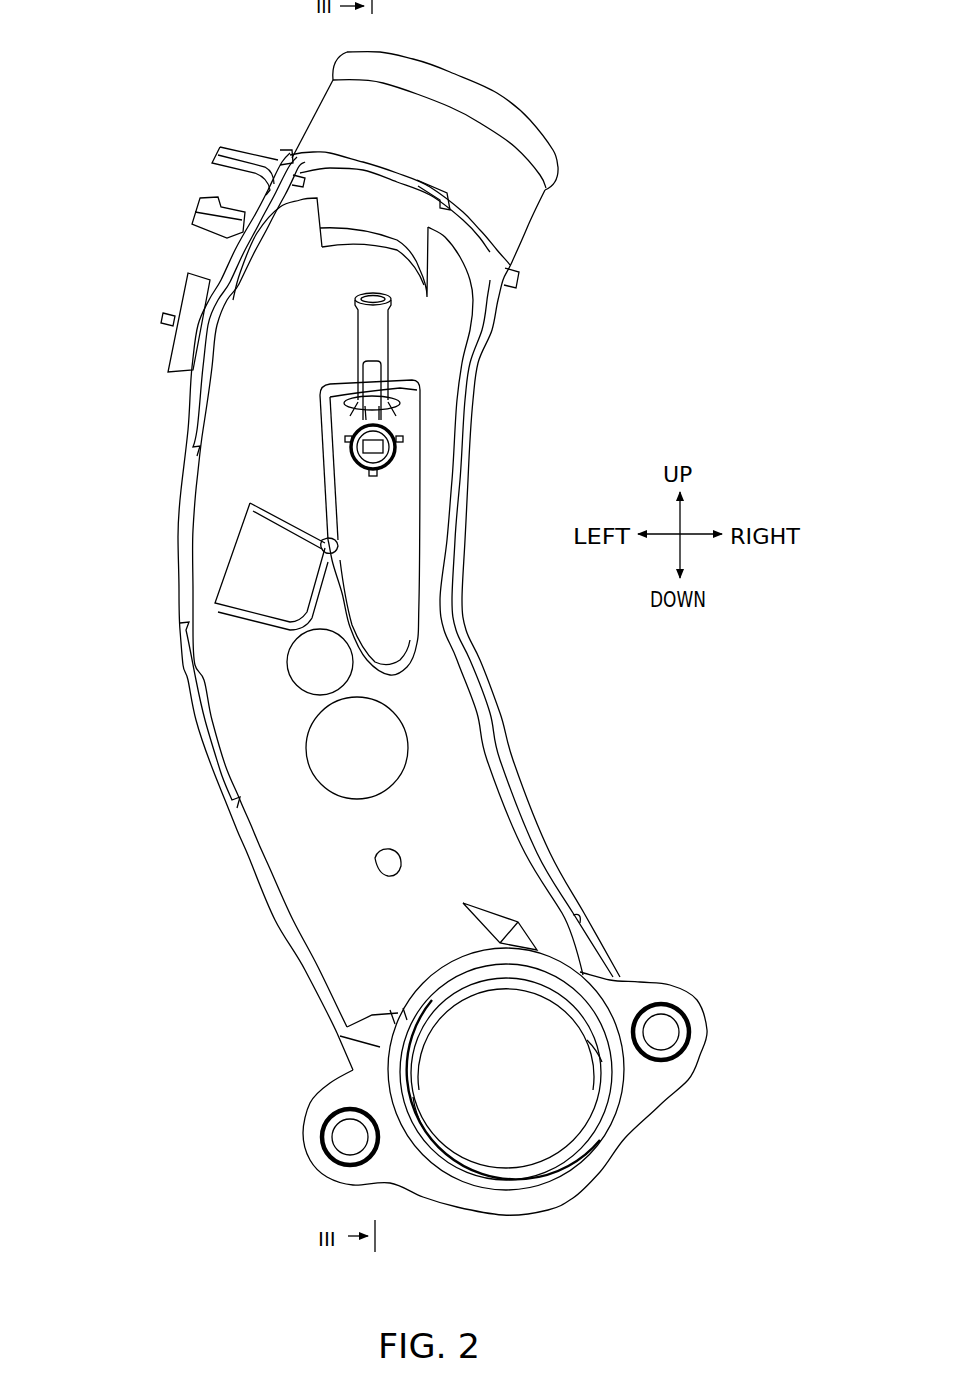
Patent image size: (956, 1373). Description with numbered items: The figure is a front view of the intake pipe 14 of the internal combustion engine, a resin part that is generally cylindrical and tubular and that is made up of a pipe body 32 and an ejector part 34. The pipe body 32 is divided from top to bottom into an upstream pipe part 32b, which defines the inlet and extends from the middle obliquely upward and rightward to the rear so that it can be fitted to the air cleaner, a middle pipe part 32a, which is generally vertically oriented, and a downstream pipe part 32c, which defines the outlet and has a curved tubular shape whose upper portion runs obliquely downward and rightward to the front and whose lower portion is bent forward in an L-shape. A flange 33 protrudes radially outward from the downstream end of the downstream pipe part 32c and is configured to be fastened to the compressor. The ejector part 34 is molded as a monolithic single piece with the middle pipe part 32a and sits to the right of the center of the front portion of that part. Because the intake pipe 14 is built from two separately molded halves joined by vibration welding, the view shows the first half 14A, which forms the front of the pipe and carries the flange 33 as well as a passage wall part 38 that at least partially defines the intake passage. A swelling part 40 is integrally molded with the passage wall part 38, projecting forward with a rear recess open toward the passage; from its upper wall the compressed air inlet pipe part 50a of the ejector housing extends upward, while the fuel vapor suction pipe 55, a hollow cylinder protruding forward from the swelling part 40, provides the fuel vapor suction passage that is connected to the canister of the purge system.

The intake pipe 14 is at (186, 154).
The first half 14A is at (266, 770).
The pipe body 32 is at (391, 665).
The middle pipe part 32a is at (237, 455).
The upstream pipe part 32b is at (338, 113).
The downstream pipe part 32c is at (287, 853).
The flange 33 is at (400, 1180).
The ejector part 34 is at (447, 484).
The passage wall part 38 is at (434, 678).
The swelling part 40 is at (408, 512).
The compressed air inlet pipe part 50a is at (393, 332).
The fuel vapor suction pipe 55 is at (397, 450).